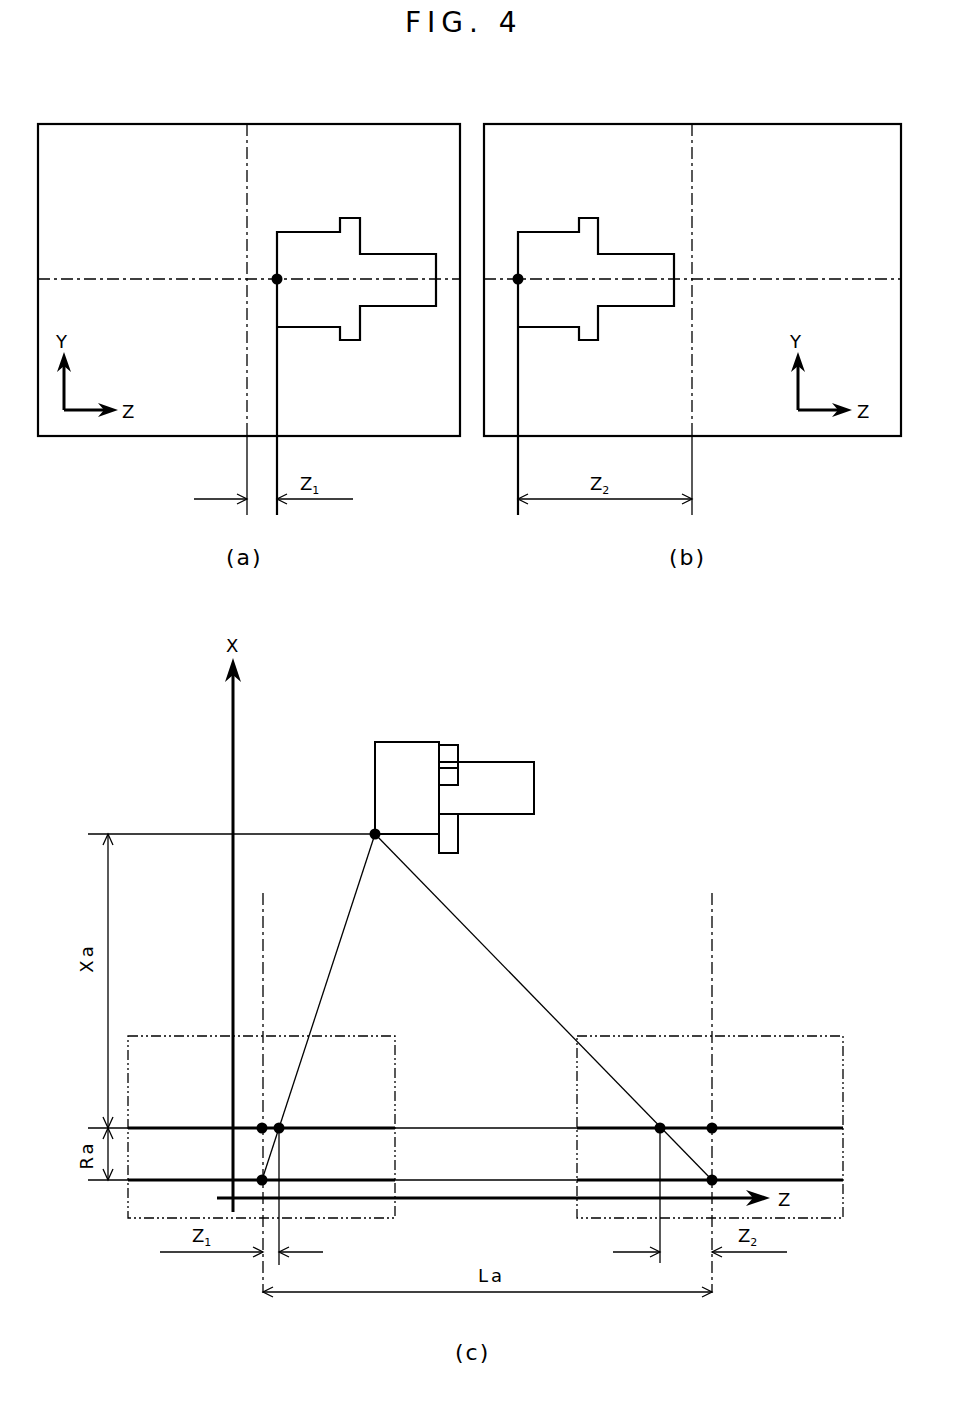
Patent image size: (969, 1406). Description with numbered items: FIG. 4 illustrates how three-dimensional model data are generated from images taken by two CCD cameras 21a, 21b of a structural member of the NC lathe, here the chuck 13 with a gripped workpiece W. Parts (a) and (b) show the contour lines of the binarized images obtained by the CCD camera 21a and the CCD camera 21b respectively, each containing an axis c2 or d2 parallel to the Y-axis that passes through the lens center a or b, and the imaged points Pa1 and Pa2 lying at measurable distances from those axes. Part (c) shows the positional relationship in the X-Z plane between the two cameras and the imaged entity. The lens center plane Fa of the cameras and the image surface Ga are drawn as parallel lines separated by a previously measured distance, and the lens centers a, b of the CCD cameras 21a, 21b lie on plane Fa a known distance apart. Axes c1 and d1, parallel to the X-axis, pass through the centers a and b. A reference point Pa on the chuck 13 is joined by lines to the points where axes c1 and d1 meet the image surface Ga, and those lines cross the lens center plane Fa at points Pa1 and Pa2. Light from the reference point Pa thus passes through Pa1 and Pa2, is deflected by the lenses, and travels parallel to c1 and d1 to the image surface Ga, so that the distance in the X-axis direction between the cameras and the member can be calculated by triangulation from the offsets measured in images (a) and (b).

The chuck 13 is at (383, 745).
The workpiece W is at (528, 782).
The CCD camera 21a is at (367, 1036).
The CCD camera 21b is at (777, 1036).
The reference point Pa is at (375, 834).
The point Pa1 is at (277, 279).
The point Pa2 is at (518, 279).
The lens center a is at (258, 1124).
The lens center b is at (716, 1126).
The axis c1 is at (263, 978).
The axis c2 is at (247, 408).
The axis d1 is at (712, 1022).
The axis d2 is at (692, 408).
The lens center plane Fa is at (597, 1128).
The image surface Ga is at (597, 1180).